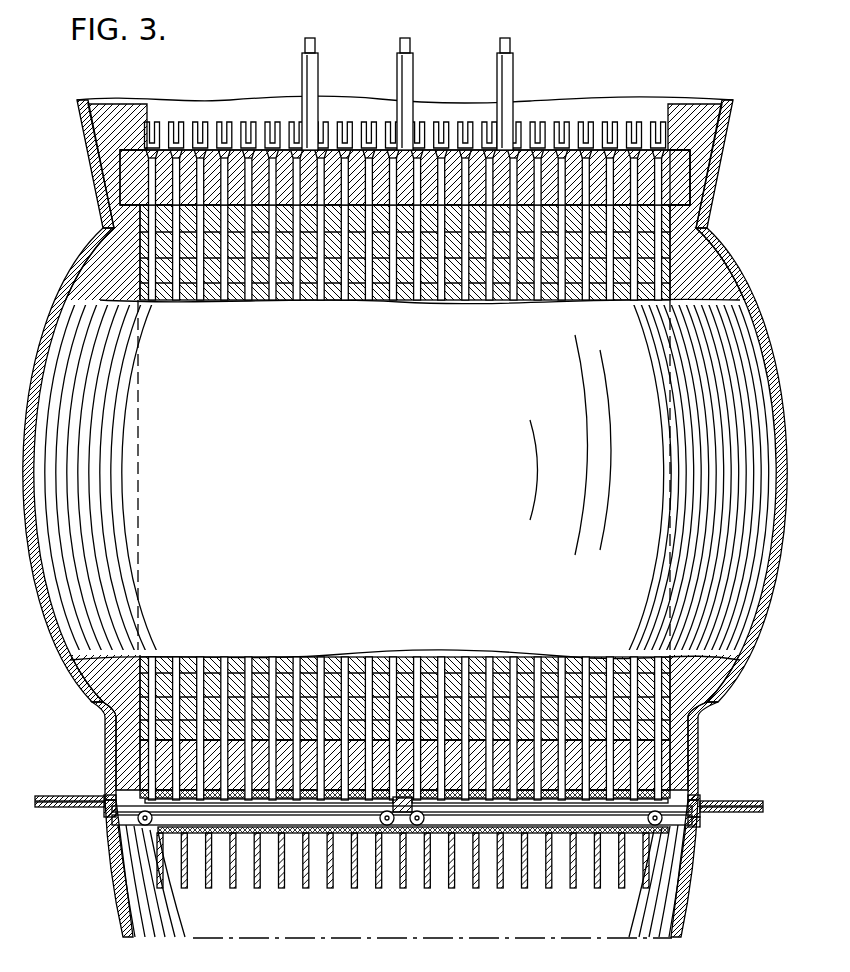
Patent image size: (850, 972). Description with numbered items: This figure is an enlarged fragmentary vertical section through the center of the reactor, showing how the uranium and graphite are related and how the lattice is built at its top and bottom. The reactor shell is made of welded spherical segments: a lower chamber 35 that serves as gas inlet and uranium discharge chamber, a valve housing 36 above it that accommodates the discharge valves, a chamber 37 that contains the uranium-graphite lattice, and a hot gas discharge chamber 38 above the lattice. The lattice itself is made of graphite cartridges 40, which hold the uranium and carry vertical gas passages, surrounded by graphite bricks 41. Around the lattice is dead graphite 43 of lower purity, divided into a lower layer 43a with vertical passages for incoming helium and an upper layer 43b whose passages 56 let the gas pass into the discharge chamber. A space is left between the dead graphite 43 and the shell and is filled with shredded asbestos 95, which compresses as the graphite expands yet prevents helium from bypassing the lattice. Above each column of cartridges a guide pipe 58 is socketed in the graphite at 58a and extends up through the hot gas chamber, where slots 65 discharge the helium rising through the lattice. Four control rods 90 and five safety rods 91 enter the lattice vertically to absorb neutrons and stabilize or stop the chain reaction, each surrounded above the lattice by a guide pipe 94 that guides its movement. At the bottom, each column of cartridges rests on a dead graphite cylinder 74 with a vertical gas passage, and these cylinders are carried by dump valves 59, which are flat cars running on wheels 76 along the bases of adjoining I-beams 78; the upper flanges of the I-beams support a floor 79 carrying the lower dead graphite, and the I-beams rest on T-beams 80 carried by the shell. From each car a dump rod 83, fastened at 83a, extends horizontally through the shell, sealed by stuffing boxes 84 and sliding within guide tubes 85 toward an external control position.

The lower chamber 35 is at (696, 892).
The valve housing 36 is at (683, 769).
The chamber 37 is at (729, 297).
The hot gas discharge chamber 38 is at (706, 128).
The graphite cartridges 40 is at (676, 234).
The graphite bricks 41 is at (672, 264).
The dead graphite 43 is at (118, 262).
The lower layer of dead graphite 43a is at (126, 747).
The upper layer of dead graphite 43b is at (689, 200).
The passages 56 is at (672, 187).
The guide pipe 58 is at (641, 130).
The socket 58a is at (668, 160).
The dump valves 59 is at (250, 838).
The slots 65 is at (576, 128).
The dead graphite cylinder 74 is at (152, 758).
The wheels 76 is at (143, 820).
The I-beams 78 is at (298, 812).
The floor 79 is at (120, 790).
The T-beams 80 is at (526, 862).
The dump rod 83 is at (52, 797).
The fastening of dump rod 83a is at (694, 824).
The stuffing boxes 84 is at (107, 817).
The guide tubes 85 is at (56, 808).
The control rods 90 is at (304, 46).
The safety rods 91 is at (402, 50).
The guide pipe 94 is at (302, 70).
The shredded asbestos 95 is at (742, 325).